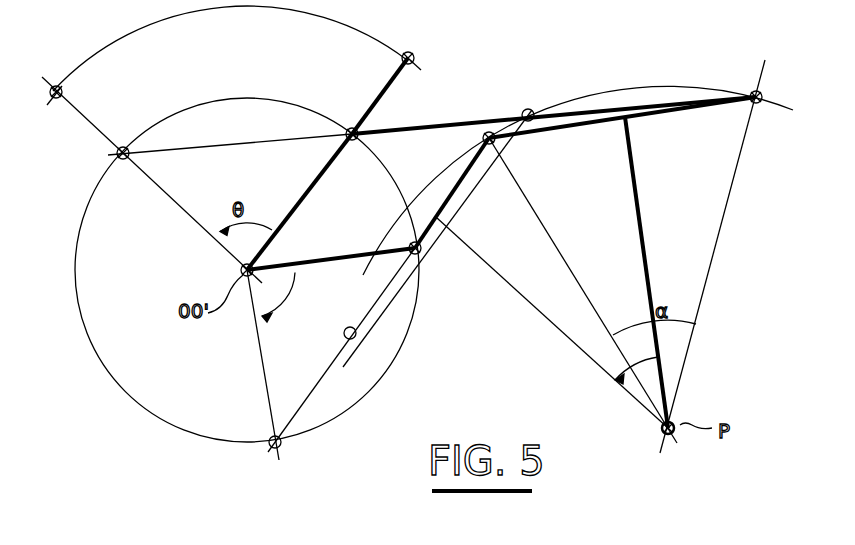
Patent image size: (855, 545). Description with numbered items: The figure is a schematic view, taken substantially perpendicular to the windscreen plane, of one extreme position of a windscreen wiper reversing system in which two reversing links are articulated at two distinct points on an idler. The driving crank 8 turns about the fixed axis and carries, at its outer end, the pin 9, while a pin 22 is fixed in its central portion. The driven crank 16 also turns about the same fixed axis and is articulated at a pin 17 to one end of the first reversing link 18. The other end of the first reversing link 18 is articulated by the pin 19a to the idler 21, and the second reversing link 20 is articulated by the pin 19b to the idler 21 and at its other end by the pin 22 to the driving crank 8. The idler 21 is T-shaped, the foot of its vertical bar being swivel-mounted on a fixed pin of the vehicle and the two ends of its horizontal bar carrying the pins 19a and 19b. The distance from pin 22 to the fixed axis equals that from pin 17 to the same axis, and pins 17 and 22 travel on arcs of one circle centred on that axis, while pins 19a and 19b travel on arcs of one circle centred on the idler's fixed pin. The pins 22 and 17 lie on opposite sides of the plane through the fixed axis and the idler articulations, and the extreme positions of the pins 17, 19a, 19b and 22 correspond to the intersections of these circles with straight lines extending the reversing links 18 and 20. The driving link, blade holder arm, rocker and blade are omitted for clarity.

The driving crank 8 is at (392, 95).
The pin 9 is at (412, 55).
The driven crank 16 is at (340, 262).
The pin 17 is at (417, 255).
The first reversing link 18 is at (468, 175).
The pin 19a is at (483, 137).
The pin 19b is at (750, 90).
The second reversing link 20 is at (463, 120).
The idler 21 is at (643, 240).
The pin 22 is at (352, 128).